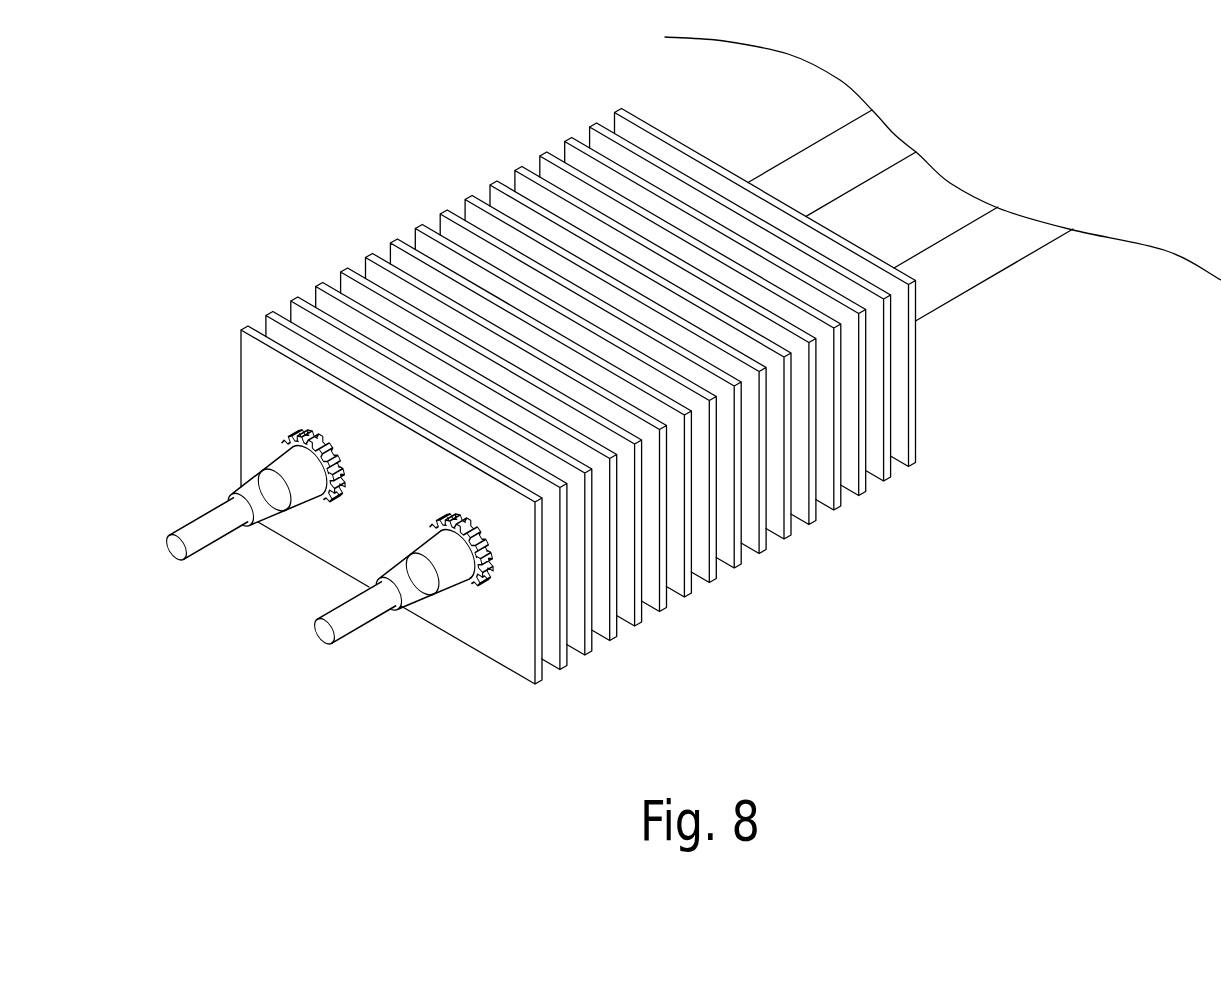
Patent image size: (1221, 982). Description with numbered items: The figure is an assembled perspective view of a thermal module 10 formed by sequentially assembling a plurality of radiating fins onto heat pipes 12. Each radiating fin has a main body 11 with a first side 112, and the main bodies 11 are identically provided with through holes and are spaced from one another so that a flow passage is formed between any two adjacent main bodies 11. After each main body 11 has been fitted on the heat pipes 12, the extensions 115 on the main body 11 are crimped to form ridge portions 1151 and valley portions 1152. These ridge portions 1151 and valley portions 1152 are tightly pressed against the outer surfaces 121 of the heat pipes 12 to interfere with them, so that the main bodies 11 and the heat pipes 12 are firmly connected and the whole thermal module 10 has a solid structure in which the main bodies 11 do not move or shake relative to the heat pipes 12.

The thermal module 10 is at (533, 409).
The main body 11 is at (266, 314).
The first side 112 is at (488, 640).
The extension 115 is at (501, 540).
The ridge portion 1151 is at (487, 543).
The valley portion 1152 is at (497, 560).
The heat pipe 12 is at (943, 226).
The outer surface 121 is at (972, 265).